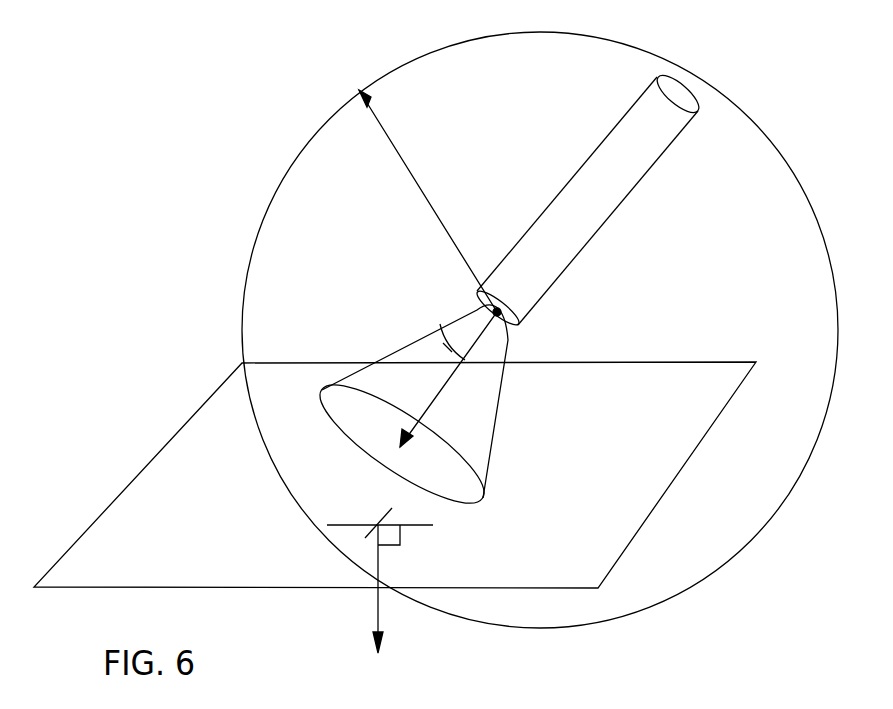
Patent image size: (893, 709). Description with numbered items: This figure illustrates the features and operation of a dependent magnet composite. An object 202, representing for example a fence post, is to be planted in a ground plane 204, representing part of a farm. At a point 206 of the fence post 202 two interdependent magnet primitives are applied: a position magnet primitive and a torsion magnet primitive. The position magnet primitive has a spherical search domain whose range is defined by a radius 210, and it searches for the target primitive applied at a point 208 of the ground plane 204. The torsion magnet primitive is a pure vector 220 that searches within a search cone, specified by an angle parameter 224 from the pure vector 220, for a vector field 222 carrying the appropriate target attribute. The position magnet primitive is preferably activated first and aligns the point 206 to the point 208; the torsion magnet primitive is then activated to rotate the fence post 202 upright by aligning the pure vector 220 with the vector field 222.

The object 202 is at (607, 157).
The ground plane 204 is at (132, 503).
The point 206 is at (502, 305).
The point 208 is at (378, 523).
The radius 210 is at (410, 172).
The pure vector 220 is at (443, 388).
The vector field 222 is at (378, 577).
The angle parameter 224 is at (450, 343).